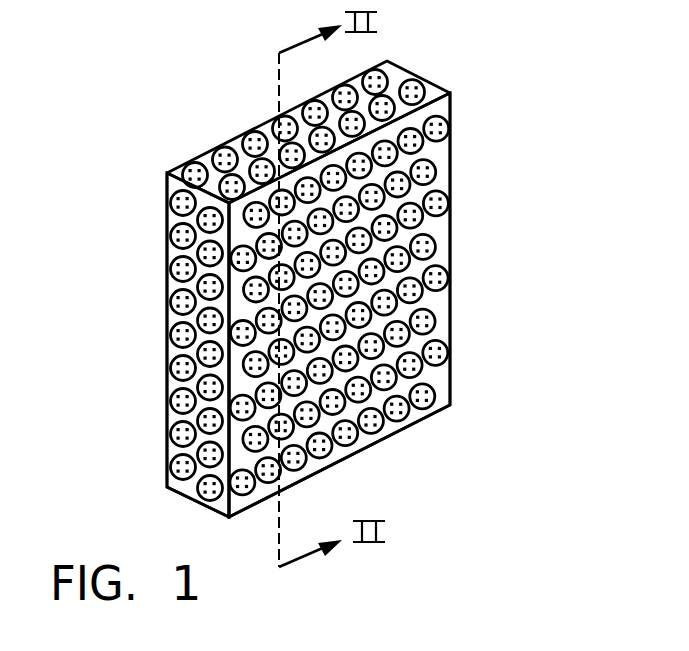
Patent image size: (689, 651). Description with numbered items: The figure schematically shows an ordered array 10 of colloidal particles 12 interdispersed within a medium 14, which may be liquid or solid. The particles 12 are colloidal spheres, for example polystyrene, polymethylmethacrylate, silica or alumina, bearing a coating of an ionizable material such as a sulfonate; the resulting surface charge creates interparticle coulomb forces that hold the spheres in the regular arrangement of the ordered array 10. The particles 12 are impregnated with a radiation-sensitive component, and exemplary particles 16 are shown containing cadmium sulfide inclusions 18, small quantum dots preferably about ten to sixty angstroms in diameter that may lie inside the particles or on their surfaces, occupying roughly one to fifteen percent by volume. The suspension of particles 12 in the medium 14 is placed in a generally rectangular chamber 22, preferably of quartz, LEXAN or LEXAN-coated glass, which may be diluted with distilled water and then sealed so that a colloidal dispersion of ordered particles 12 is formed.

The ordered array 10 is at (140, 272).
The particles 12 is at (250, 132).
The medium 14 is at (383, 305).
The exemplary particles 16 is at (420, 277).
The cadmium sulfide inclusions 18 is at (417, 393).
The chamber 22 is at (150, 405).